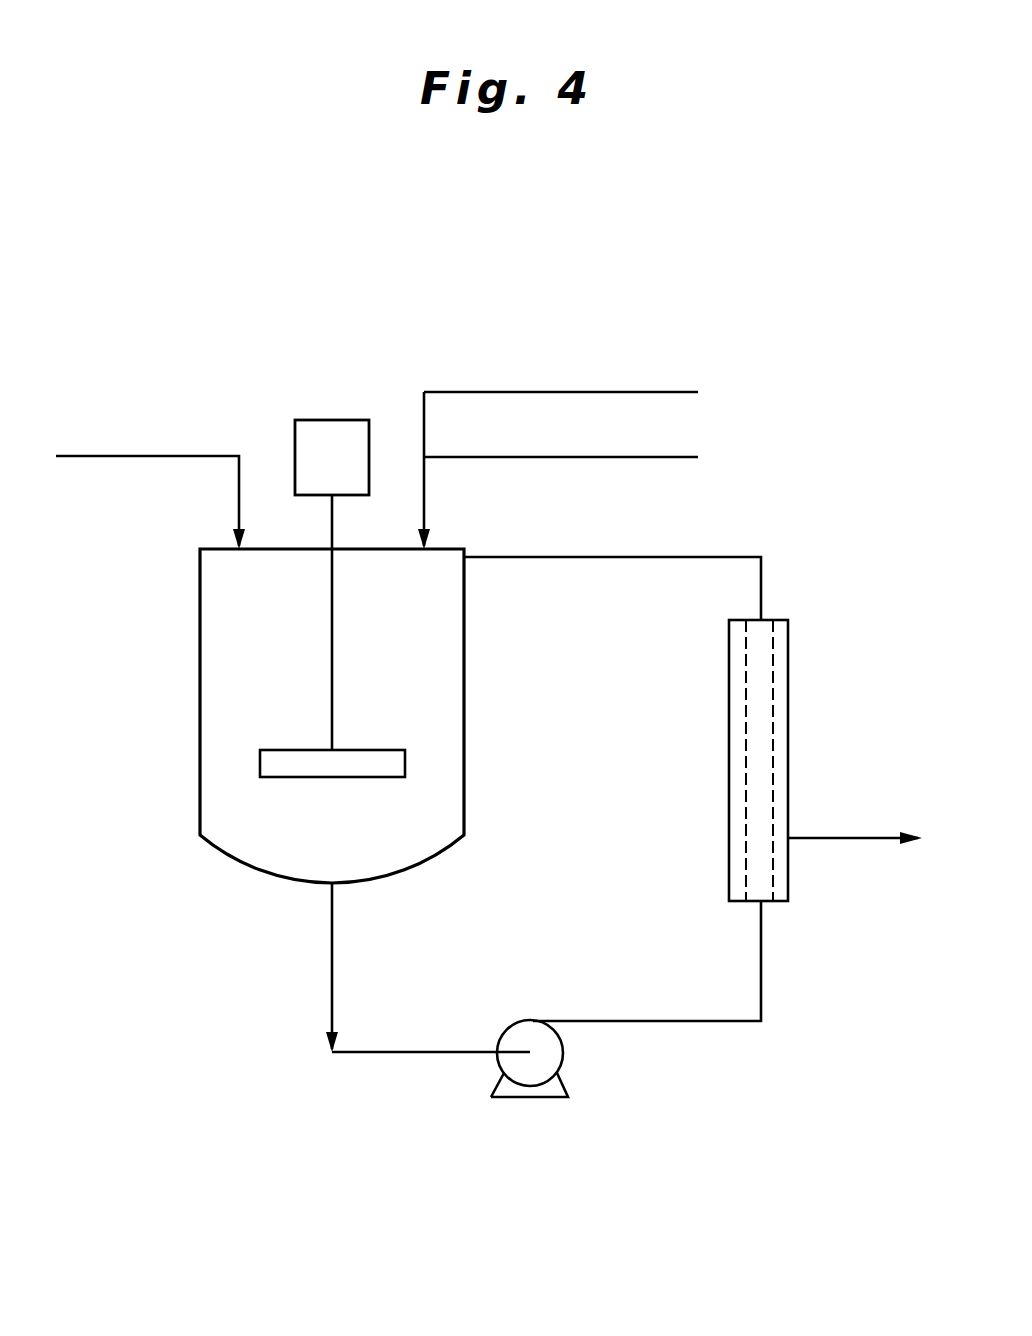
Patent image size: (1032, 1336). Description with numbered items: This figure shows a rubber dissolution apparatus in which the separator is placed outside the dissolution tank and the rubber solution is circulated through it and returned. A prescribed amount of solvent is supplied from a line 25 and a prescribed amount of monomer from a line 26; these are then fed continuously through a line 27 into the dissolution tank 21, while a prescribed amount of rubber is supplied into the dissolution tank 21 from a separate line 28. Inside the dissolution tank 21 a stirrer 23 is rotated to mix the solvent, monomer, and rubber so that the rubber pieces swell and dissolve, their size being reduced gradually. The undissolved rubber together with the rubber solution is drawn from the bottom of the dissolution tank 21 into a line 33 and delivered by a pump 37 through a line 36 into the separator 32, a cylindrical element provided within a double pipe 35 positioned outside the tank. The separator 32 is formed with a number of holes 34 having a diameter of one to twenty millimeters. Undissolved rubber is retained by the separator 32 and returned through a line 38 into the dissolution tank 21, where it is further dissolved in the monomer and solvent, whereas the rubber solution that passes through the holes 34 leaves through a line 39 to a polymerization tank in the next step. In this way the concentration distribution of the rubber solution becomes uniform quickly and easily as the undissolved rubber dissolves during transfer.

The dissolution tank 21 is at (200, 590).
The stirrer 23 is at (278, 750).
The line 25 is at (628, 457).
The line 26 is at (527, 392).
The line 27 is at (425, 495).
The line 28 is at (112, 456).
The separator 32 is at (773, 738).
The line 33 is at (407, 1052).
The holes 34 is at (746, 683).
The double pipe 35 is at (788, 640).
The line 36 is at (648, 1021).
The pump 37 is at (538, 1020).
The line 38 is at (638, 557).
The line 39 is at (850, 838).